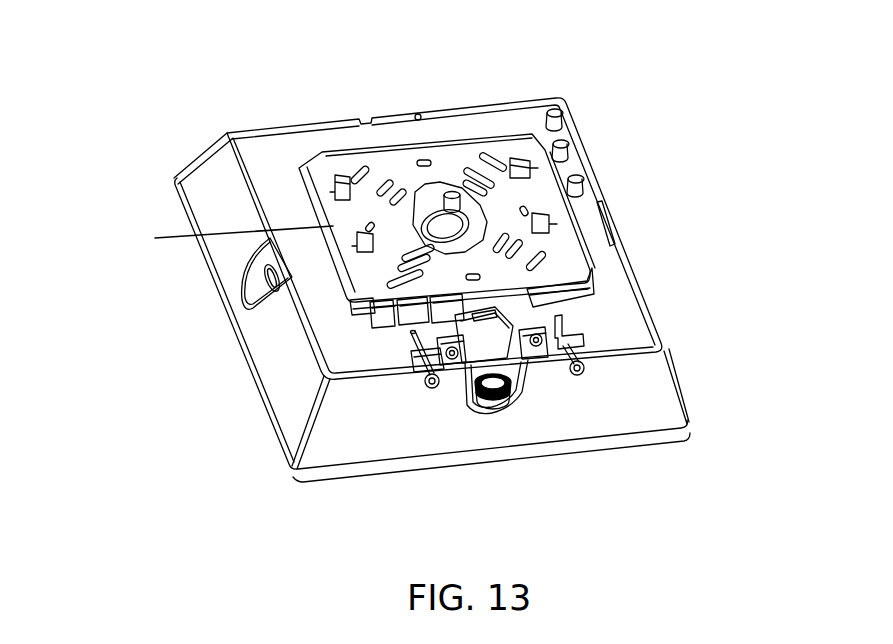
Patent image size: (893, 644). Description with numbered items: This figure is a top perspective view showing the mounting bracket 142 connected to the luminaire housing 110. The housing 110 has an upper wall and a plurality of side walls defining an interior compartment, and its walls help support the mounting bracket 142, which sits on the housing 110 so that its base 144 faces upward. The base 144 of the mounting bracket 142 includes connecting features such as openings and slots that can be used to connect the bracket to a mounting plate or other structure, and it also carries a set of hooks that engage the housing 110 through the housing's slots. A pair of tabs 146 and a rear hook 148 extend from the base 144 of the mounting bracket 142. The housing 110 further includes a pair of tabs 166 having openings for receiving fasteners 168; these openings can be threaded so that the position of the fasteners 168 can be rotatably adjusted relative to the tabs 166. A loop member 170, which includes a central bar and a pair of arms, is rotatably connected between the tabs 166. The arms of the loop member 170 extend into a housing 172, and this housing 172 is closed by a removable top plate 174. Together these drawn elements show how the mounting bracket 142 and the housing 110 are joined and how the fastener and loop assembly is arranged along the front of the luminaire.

The housing 110 is at (160, 178).
The mounting bracket 142 is at (448, 146).
The base 144 is at (318, 156).
The tabs 146 is at (403, 320).
The rear hook 148 is at (483, 315).
The tabs 166 is at (575, 343).
The fasteners 168 is at (583, 357).
The loop member 170 is at (502, 319).
The housing 172 is at (462, 360).
The removable top plate 174 is at (537, 337).